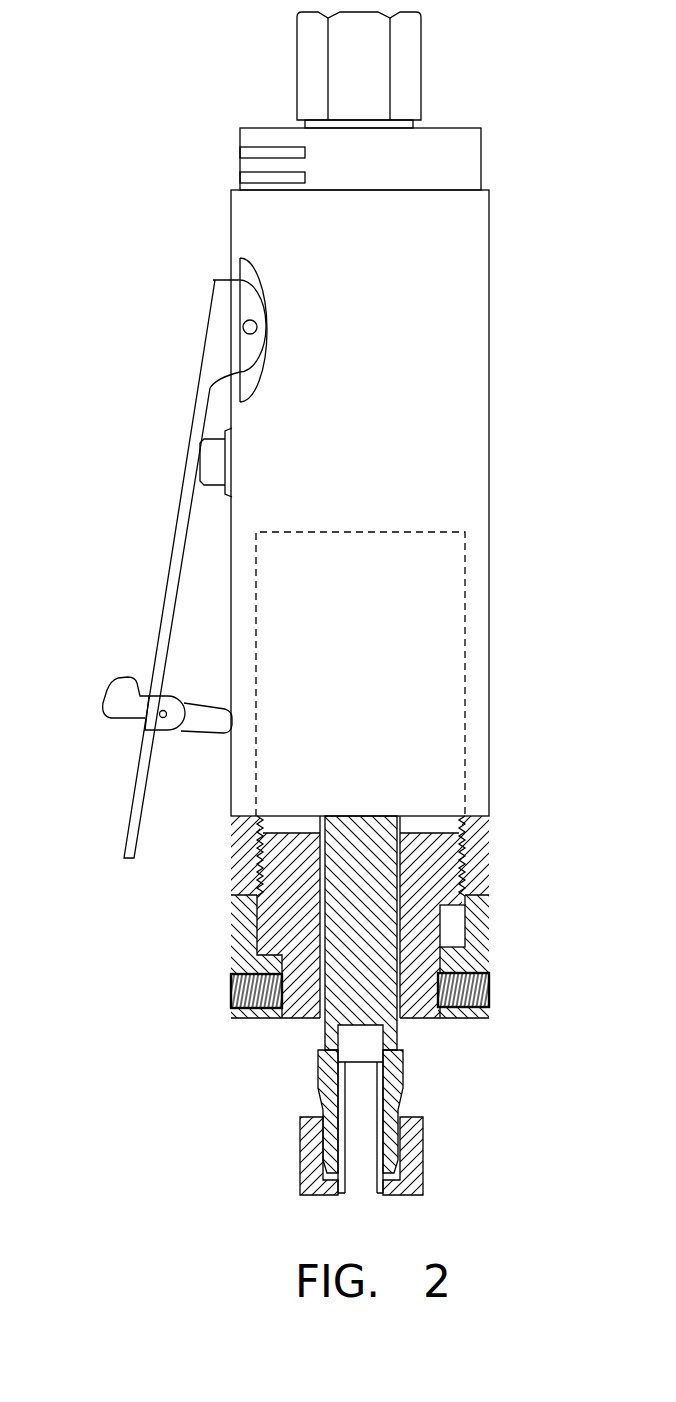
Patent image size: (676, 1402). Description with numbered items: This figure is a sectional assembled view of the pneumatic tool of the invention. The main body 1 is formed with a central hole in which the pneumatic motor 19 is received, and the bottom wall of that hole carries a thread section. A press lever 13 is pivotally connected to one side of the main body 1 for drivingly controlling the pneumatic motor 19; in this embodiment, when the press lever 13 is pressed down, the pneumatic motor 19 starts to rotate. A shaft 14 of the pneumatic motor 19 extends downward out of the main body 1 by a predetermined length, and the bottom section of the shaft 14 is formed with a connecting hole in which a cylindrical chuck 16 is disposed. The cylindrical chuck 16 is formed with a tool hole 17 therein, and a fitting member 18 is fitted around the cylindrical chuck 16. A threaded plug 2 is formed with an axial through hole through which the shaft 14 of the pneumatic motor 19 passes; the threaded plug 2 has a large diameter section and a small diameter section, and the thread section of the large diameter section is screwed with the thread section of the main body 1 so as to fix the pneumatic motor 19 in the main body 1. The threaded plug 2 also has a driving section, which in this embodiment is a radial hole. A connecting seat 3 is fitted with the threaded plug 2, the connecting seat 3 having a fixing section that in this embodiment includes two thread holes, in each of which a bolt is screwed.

The main body 1 is at (452, 488).
The threaded plug 2 is at (275, 930).
The connecting seat 3 is at (477, 963).
The press lever 13 is at (158, 670).
The shaft 14 is at (358, 897).
The cylindrical chuck 16 is at (338, 1078).
The tool hole 17 is at (377, 1167).
The fitting member 18 is at (413, 1160).
The pneumatic motor 19 is at (425, 700).